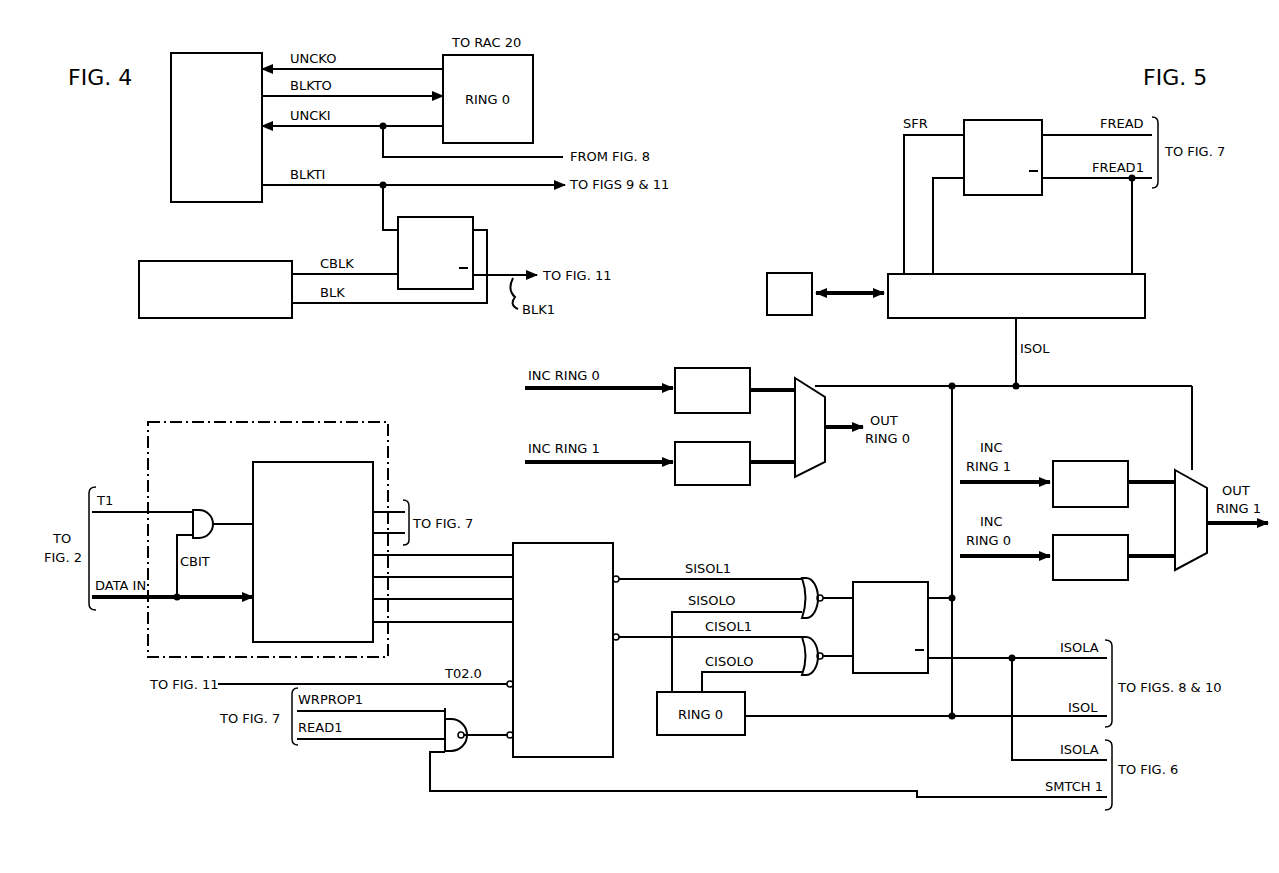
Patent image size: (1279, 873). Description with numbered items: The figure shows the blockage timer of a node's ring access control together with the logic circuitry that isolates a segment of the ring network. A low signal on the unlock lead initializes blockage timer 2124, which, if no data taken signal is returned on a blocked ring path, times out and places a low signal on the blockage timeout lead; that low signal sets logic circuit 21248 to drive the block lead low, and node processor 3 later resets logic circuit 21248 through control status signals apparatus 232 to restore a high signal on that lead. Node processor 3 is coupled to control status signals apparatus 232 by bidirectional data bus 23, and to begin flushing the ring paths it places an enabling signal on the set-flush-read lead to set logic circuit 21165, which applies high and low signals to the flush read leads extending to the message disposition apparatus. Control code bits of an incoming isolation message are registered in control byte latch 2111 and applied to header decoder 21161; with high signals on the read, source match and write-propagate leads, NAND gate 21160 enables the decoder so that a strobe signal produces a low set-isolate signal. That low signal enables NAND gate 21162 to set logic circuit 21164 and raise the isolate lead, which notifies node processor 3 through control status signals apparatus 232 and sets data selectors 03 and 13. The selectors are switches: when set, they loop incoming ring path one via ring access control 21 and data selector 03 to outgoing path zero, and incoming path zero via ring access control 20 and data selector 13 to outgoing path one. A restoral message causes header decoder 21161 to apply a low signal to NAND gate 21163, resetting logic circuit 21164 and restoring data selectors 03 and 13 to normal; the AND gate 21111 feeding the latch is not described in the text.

In FIG. 4, the blockage timer 2124 is at (171, 175).
In FIG. 4, the control status signals apparatus 232 is at (206, 261).
In FIG. 5, the control status signals apparatus 232 is at (1145, 296).
In FIG. 4, the blockage timer logic circuit 21248 is at (458, 214).
In FIG. 5, the logic circuit 21165 is at (1000, 128).
In FIG. 5, the node processor 3 is at (787, 273).
In FIG. 5, the data bus 23 is at (845, 291).
In FIG. 5, the ring access control apparatus 20 is at (722, 368).
In FIG. 5, the ring access control apparatus 21 is at (695, 485).
In FIG. 5, the data selector 03 is at (822, 455).
In FIG. 5, the data selector 13 is at (1192, 553).
In FIG. 5, the control byte latch 2111 is at (375, 438).
In FIG. 5, the AND gate 21111 is at (204, 515).
In FIG. 5, the header decoder 21161 is at (580, 555).
In FIG. 5, the NAND gate 21162 is at (813, 588).
In FIG. 5, the NAND gate 21163 is at (815, 667).
In FIG. 5, the logic circuit 21164 is at (888, 582).
In FIG. 5, the NAND gate 21160 is at (467, 742).